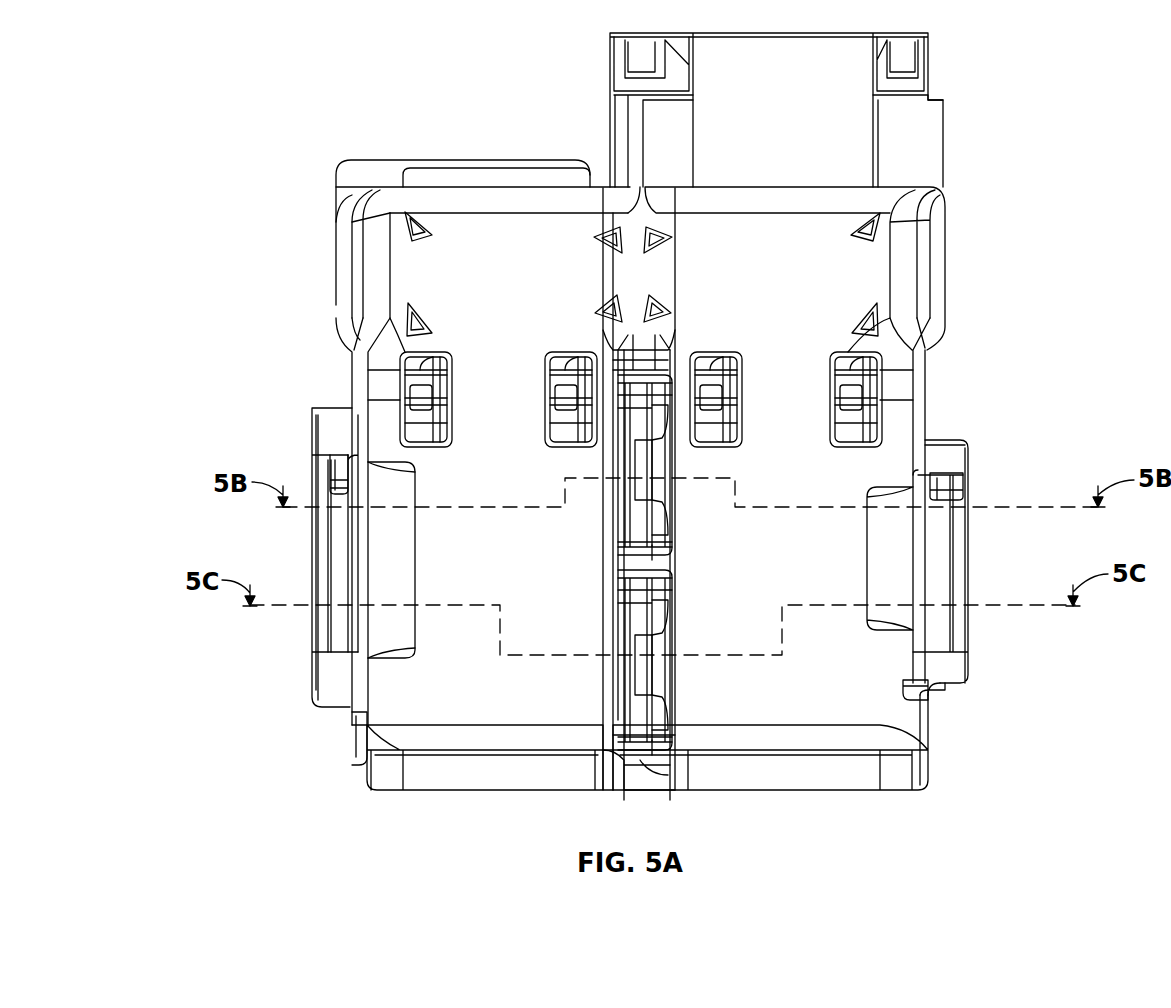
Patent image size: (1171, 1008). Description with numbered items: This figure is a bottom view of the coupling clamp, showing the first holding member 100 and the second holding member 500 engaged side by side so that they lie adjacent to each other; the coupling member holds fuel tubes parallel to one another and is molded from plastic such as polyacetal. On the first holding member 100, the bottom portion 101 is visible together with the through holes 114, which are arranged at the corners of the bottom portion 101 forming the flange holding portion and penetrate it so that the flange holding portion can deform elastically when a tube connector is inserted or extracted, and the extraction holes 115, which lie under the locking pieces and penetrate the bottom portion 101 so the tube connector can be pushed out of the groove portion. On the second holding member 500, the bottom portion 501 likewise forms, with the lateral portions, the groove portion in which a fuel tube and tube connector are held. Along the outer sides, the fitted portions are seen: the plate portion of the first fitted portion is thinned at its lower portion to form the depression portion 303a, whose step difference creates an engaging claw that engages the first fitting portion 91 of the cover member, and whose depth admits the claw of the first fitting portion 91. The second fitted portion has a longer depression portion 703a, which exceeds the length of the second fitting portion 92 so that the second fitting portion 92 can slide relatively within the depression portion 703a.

The first holding member 100 is at (828, 773).
The second holding member 500 is at (505, 773).
The through holes 114 is at (862, 215).
The extraction holes 115 is at (870, 372).
The bottom portion 101 is at (903, 680).
The bottom portion 501 is at (385, 700).
The first fitting portion 91 is at (935, 553).
The second fitting portion 92 is at (340, 556).
The depression portion 303a is at (940, 490).
The depression portion 703a is at (330, 466).